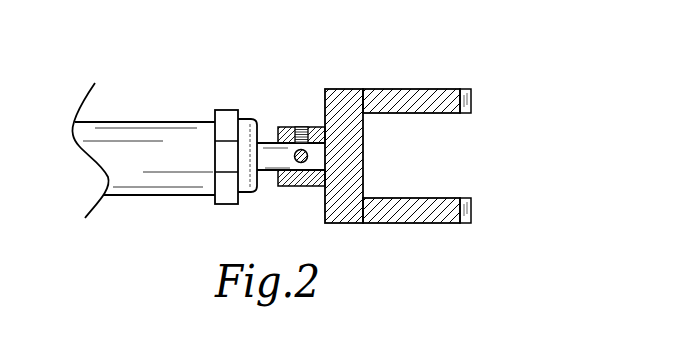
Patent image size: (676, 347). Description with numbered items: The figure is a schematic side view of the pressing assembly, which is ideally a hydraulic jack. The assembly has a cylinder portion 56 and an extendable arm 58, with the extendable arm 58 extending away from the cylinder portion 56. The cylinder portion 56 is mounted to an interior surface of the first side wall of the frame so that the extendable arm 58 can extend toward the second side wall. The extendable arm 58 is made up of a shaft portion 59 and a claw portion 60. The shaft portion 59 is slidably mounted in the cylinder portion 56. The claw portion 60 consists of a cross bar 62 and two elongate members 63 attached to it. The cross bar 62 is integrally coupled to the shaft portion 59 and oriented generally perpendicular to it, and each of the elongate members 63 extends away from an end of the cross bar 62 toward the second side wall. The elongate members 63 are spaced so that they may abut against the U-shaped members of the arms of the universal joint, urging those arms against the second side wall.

The cylinder portion 56 is at (152, 195).
The shaft portion 59 is at (268, 152).
The extendable arm 58 is at (295, 98).
The cross bar 62 is at (348, 163).
The elongate members 63 is at (448, 90).
The claw portion 60 is at (472, 212).